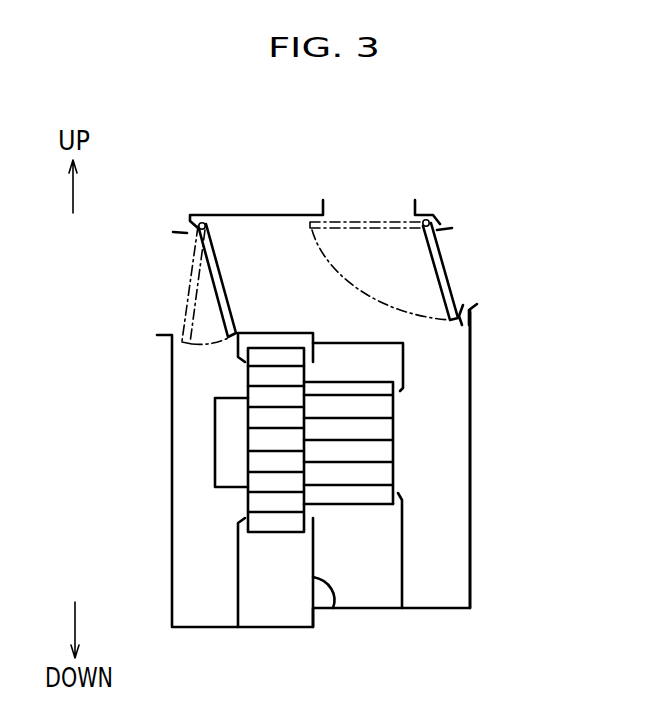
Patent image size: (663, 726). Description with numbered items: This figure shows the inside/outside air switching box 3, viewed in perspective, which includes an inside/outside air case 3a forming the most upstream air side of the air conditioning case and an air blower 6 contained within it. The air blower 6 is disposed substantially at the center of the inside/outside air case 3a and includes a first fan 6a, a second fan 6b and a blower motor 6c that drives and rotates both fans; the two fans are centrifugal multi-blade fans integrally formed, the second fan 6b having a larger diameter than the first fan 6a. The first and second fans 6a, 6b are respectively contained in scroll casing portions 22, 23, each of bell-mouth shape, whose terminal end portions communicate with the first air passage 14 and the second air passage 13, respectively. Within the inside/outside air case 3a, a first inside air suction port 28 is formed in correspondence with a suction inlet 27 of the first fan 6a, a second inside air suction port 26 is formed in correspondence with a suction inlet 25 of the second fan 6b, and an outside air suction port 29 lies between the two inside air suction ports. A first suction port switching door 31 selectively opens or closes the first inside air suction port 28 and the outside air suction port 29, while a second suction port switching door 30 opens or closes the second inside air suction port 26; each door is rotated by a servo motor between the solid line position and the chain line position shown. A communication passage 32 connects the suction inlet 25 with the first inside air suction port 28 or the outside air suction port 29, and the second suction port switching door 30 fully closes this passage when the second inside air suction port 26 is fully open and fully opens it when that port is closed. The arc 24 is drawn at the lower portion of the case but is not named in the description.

The inside/outside air switching box 3 is at (443, 191).
The inside/outside air case 3a is at (470, 458).
The air blower 6 is at (419, 369).
The first fan 6a is at (377, 495).
The second fan 6b is at (262, 377).
The blower motor 6c is at (222, 460).
The second air passage 13 is at (275, 588).
The first air passage 14 is at (383, 608).
The scroll casing portion 22 is at (270, 340).
The scroll casing portion 23 is at (330, 330).
The guide arc 24 is at (332, 610).
The suction inlet 25 is at (260, 503).
The second inside air suction port 26 is at (176, 302).
The suction inlet 27 is at (385, 428).
The first inside air suction port 28 is at (470, 294).
The outside air suction port 29 is at (352, 220).
The second suction port switching door 30 is at (200, 289).
The first suction port switching door 31 is at (458, 278).
The communication passage 32 is at (243, 253).